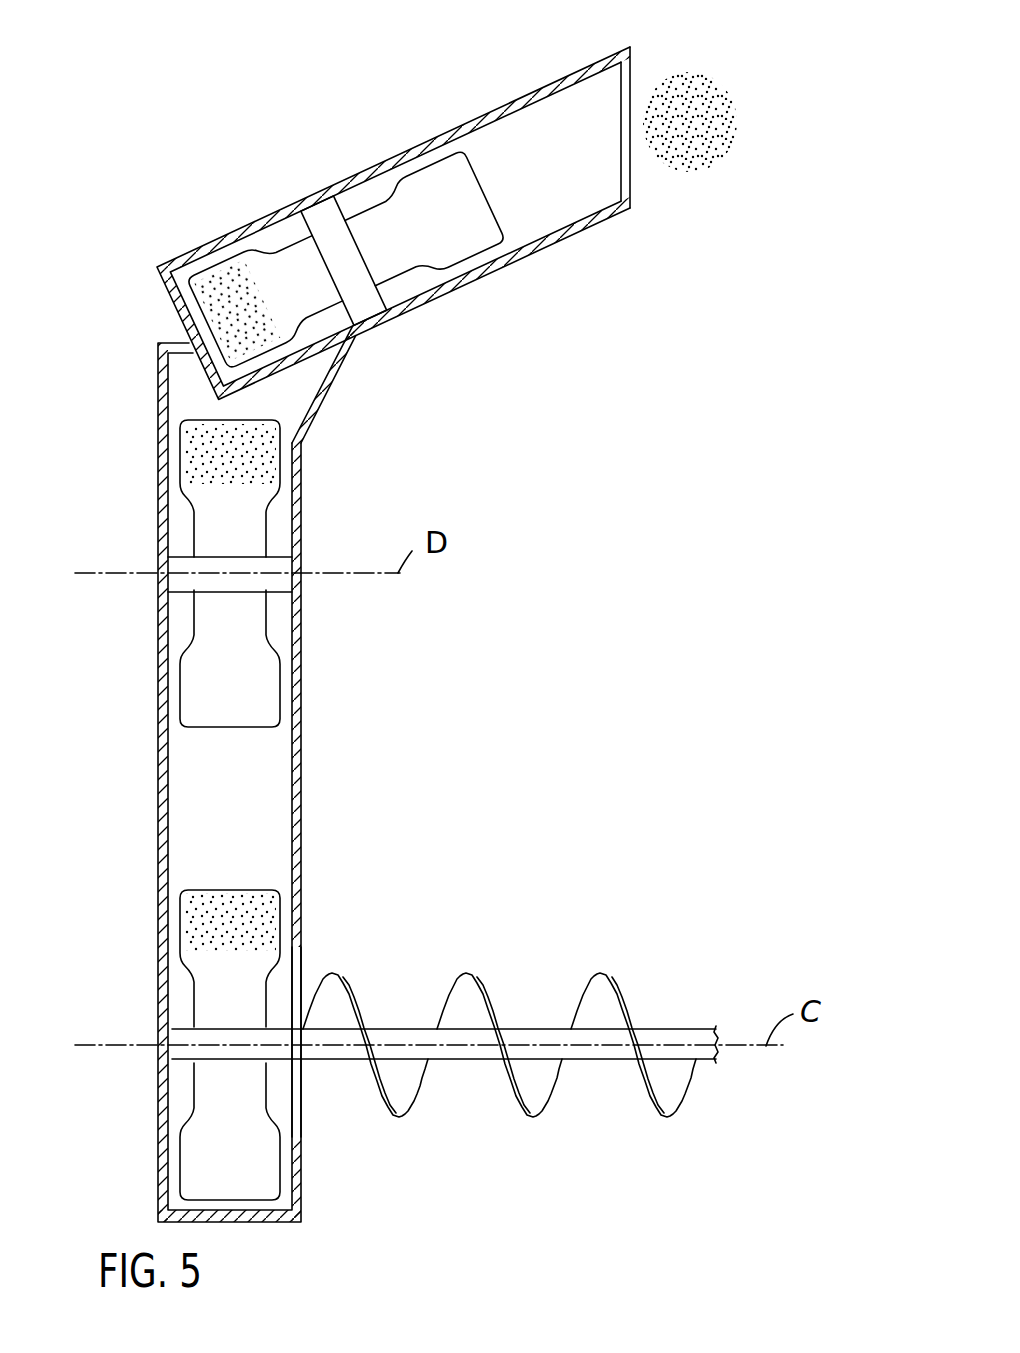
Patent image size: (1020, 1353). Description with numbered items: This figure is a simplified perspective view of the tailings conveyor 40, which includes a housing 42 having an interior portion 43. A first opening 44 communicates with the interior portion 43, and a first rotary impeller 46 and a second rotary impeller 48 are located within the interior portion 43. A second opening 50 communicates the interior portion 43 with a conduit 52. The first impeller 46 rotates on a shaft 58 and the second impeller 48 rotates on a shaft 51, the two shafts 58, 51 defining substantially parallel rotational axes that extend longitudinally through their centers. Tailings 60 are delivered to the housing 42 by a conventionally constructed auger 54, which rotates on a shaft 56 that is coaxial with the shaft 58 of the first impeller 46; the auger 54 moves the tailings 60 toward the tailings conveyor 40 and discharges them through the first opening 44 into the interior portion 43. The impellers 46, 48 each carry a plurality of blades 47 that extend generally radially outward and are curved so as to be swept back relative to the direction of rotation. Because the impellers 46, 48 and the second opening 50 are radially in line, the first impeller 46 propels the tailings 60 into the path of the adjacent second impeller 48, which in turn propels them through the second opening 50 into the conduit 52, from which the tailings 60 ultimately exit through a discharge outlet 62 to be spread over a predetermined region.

The tailings conveyor 40 is at (116, 386).
The housing 42 is at (305, 503).
The interior portion 43 is at (262, 816).
The first opening 44 is at (305, 961).
The first rotary impeller 46 is at (196, 956).
The blades 47 is at (281, 1189).
The second rotary impeller 48 is at (190, 484).
The second opening 50 is at (298, 368).
The shaft 51 is at (300, 582).
The conduit 52 is at (512, 138).
The auger 54 is at (550, 1090).
The shaft 56 is at (530, 1025).
The shaft 58 is at (173, 1047).
The tailings 60 is at (197, 907).
The discharge outlet 62 is at (633, 186).